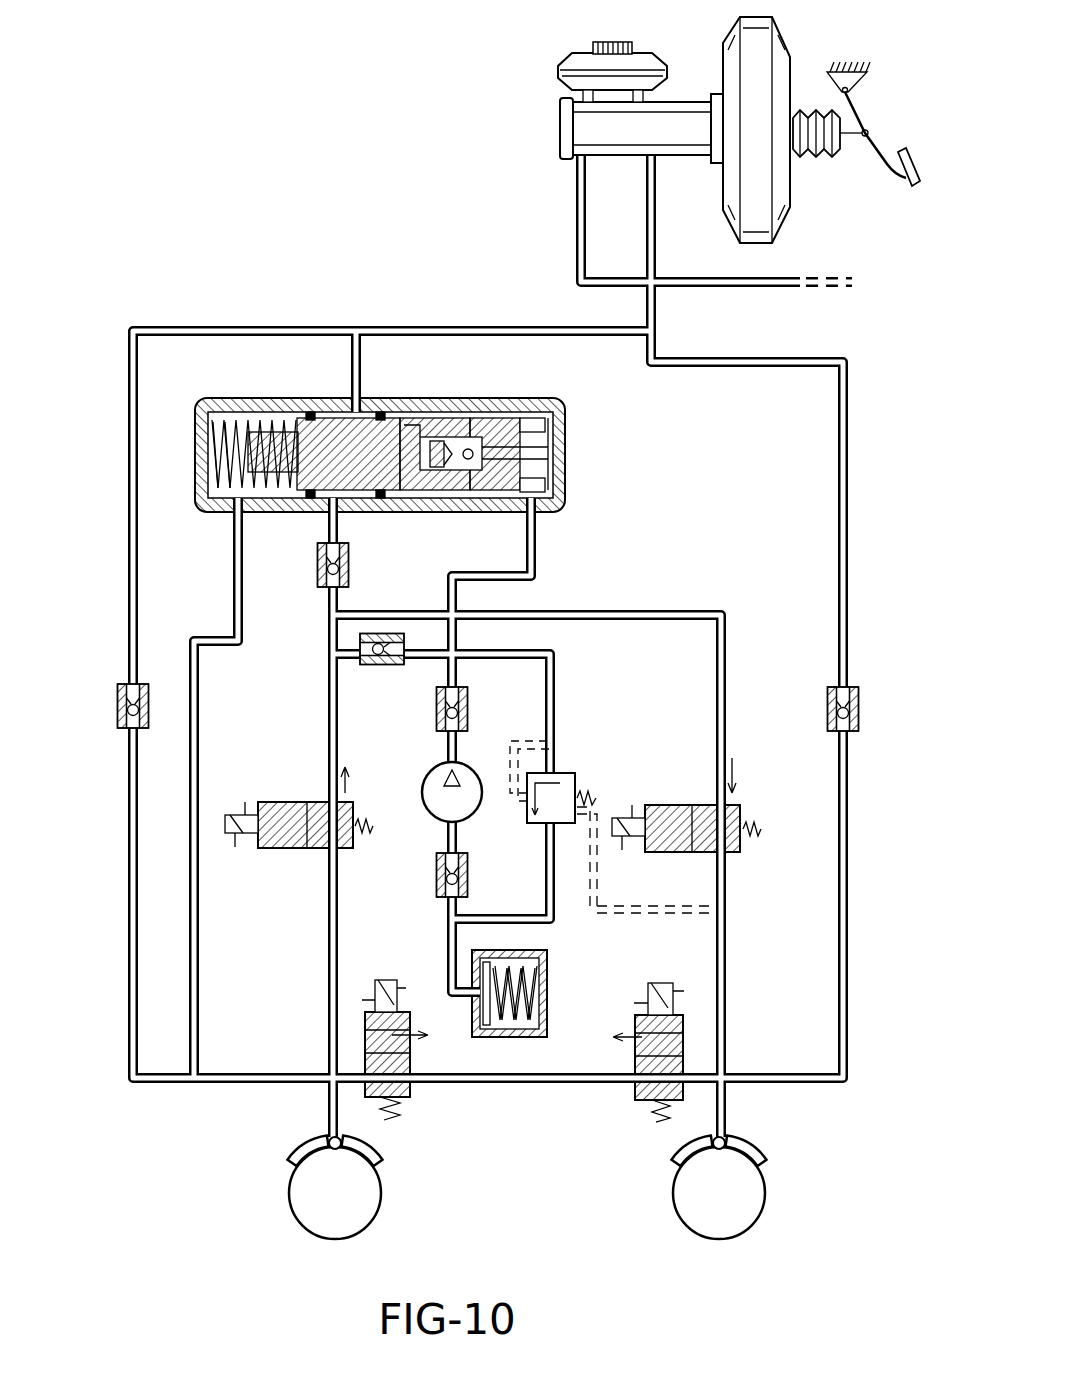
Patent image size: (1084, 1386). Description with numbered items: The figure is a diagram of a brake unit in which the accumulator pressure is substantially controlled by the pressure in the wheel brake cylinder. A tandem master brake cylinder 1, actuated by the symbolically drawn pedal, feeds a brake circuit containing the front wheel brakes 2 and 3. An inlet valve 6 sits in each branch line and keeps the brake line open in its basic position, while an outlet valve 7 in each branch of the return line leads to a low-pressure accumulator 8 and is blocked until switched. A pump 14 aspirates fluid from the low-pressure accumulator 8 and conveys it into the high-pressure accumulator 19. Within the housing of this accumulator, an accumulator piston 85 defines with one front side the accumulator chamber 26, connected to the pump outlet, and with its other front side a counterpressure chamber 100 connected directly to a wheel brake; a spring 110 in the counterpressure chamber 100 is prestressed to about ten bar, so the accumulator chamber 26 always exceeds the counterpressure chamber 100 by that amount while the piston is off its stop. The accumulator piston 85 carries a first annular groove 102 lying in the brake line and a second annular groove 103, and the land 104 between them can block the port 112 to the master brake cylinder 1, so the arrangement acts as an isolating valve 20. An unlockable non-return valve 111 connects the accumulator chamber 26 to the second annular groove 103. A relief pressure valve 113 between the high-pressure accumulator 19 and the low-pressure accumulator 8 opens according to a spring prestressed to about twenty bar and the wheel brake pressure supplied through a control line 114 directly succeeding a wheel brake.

The tandem master brake cylinder 1 is at (562, 112).
The front wheel brake 2 is at (370, 1193).
The front wheel brake 3 is at (680, 1195).
The inlet valve 6 is at (290, 802).
The outlet valve 7 is at (408, 1092).
The low-pressure accumulator 8 is at (547, 963).
The pump 14 is at (430, 786).
The high-pressure accumulator 19 is at (568, 453).
The isolating valve 20 is at (255, 398).
The accumulator chamber 26 is at (562, 490).
The accumulator piston 85 is at (322, 420).
The counterpressure chamber 100 is at (220, 512).
The first annular groove 102 is at (356, 512).
The second annular groove 103 is at (425, 512).
The land 104 is at (400, 408).
The spring 110 is at (208, 462).
The unlockable non-return valve 111 is at (488, 420).
The port 112 is at (364, 405).
The relief pressure valve 113 is at (572, 775).
The control line 114 is at (622, 896).